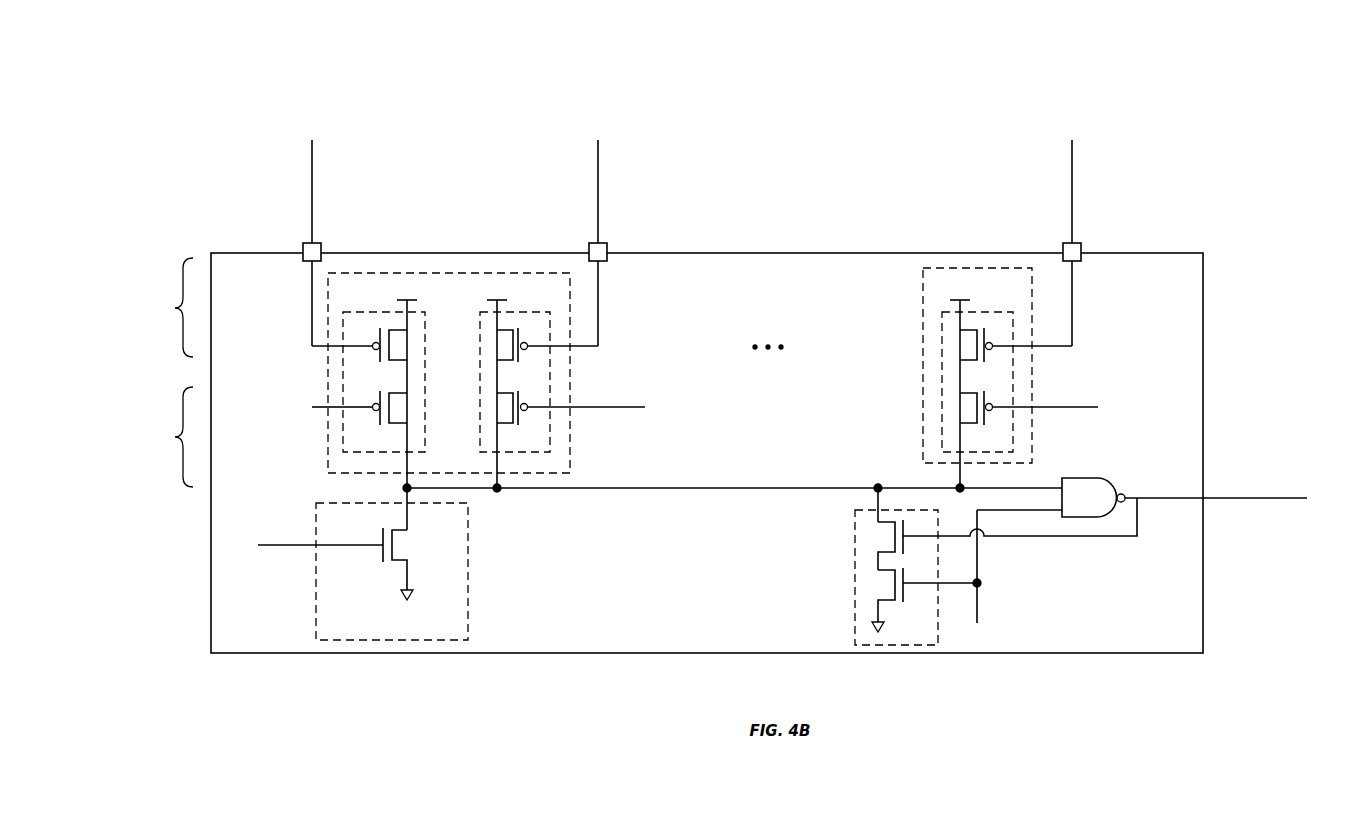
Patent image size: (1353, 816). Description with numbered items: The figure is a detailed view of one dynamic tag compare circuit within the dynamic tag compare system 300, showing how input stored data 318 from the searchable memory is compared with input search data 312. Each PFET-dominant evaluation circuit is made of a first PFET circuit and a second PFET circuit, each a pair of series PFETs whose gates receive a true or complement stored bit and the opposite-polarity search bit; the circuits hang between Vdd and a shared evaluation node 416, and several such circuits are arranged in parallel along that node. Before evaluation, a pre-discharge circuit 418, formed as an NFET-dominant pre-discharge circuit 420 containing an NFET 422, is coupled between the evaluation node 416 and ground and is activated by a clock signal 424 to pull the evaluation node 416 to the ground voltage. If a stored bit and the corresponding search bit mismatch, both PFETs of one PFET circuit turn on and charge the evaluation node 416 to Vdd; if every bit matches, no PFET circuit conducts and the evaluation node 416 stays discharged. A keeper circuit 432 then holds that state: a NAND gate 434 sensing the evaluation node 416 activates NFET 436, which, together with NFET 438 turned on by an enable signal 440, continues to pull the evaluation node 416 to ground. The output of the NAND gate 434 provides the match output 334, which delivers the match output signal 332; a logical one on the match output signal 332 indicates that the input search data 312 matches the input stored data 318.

The dynamic tag compare system 300 is at (980, 103).
The input stored data 318 is at (141, 307).
The input search data 312 is at (141, 437).
The evaluation node 416 is at (696, 488).
The pre-discharge circuit 418 is at (474, 564).
The NFET-dominant pre-discharge circuit 420 is at (392, 564).
The NFET 422 is at (395, 567).
The clock signal 424 is at (302, 542).
The keeper circuit 432 is at (855, 640).
The NFET 436 is at (884, 531).
The NFET 438 is at (884, 592).
The enable signal 440 is at (986, 603).
The NAND gate 434 is at (1093, 497).
The match output 334 is at (1152, 500).
The match output signal 332 is at (1287, 496).